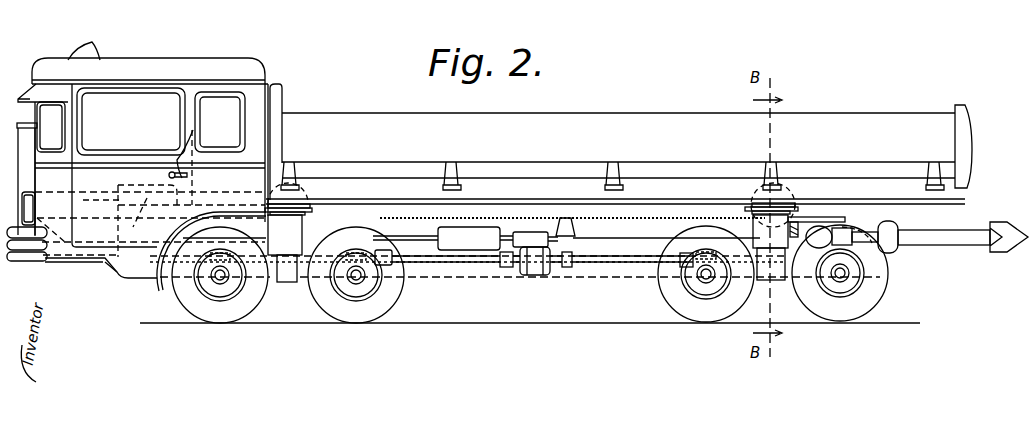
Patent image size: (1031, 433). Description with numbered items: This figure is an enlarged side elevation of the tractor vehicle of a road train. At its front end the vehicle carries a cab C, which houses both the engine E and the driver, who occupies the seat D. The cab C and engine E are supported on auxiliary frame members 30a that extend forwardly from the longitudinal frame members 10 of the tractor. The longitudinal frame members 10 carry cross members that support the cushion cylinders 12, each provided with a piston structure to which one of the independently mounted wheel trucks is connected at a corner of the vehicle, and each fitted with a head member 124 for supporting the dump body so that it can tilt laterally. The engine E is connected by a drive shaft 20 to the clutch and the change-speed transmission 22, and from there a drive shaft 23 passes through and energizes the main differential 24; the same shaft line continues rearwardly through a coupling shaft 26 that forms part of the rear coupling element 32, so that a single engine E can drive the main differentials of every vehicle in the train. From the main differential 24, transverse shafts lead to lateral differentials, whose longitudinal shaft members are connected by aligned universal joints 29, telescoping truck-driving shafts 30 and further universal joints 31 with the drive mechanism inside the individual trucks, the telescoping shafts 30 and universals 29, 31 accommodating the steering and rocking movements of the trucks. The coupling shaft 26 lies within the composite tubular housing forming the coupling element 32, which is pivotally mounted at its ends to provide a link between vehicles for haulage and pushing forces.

The cab C is at (159, 68).
The engine E is at (84, 202).
The seat D is at (100, 279).
The auxiliary frame members 30a is at (183, 238).
The longitudinal frame members 10 is at (619, 162).
The cushion cylinders 12 is at (292, 285).
The head members 124 is at (310, 207).
The drive shaft 20 is at (392, 236).
The change-speed transmission 22 is at (480, 250).
The drive shaft 23 is at (510, 232).
The main differential 24 is at (534, 275).
The coupling shaft 26 is at (565, 227).
The universal joints 29 is at (503, 267).
The telescoping truck-driving shafts 30 is at (432, 263).
The universal joints 31 is at (393, 259).
The coupling elements 32 is at (967, 240).